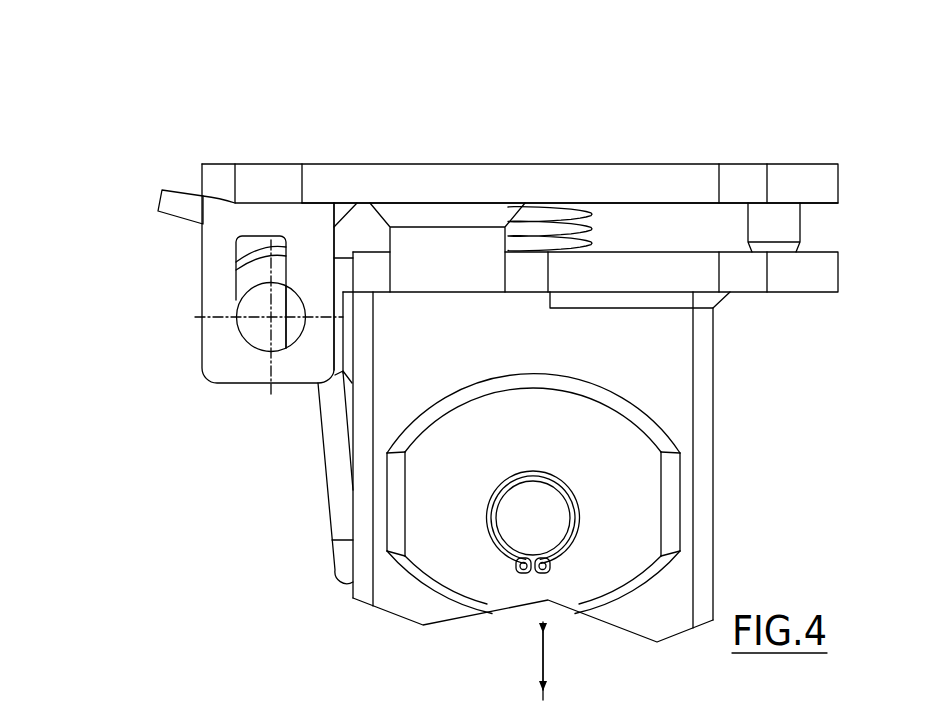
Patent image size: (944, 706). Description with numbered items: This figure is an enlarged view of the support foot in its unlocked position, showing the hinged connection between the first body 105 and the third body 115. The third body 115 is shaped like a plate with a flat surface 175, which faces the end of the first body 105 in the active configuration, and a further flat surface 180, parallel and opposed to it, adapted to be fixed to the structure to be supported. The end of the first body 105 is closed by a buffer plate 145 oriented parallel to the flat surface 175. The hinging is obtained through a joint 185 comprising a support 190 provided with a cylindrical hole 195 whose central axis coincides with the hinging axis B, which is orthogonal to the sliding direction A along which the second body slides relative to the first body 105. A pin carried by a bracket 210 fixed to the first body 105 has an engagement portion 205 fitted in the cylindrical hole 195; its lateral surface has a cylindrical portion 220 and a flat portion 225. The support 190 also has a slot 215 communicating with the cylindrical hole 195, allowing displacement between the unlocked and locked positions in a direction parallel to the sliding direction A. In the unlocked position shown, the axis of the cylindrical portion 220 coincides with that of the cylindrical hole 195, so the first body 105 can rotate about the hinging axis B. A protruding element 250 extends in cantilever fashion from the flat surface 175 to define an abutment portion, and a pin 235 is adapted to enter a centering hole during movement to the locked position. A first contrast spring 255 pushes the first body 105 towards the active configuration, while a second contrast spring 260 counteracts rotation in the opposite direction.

The first body 105 is at (700, 448).
The third body 115 is at (692, 177).
The buffer plate 145 is at (790, 282).
The flat surface 175 is at (622, 200).
The further flat surface 180 is at (388, 162).
The joint 185 is at (165, 410).
The support 190 is at (215, 335).
The cylindrical hole 195 is at (309, 334).
The engagement portion 205 is at (266, 322).
The bracket 210 is at (247, 283).
The slot 215 is at (233, 249).
The cylindrical portion 220 is at (263, 278).
The flat portion 225 is at (291, 314).
The pin 235 is at (775, 224).
The protruding element 250 is at (442, 258).
The first contrast spring 255 is at (328, 510).
The second contrast spring 260 is at (556, 218).
The hinging axis B is at (265, 313).
The sliding direction A is at (555, 661).